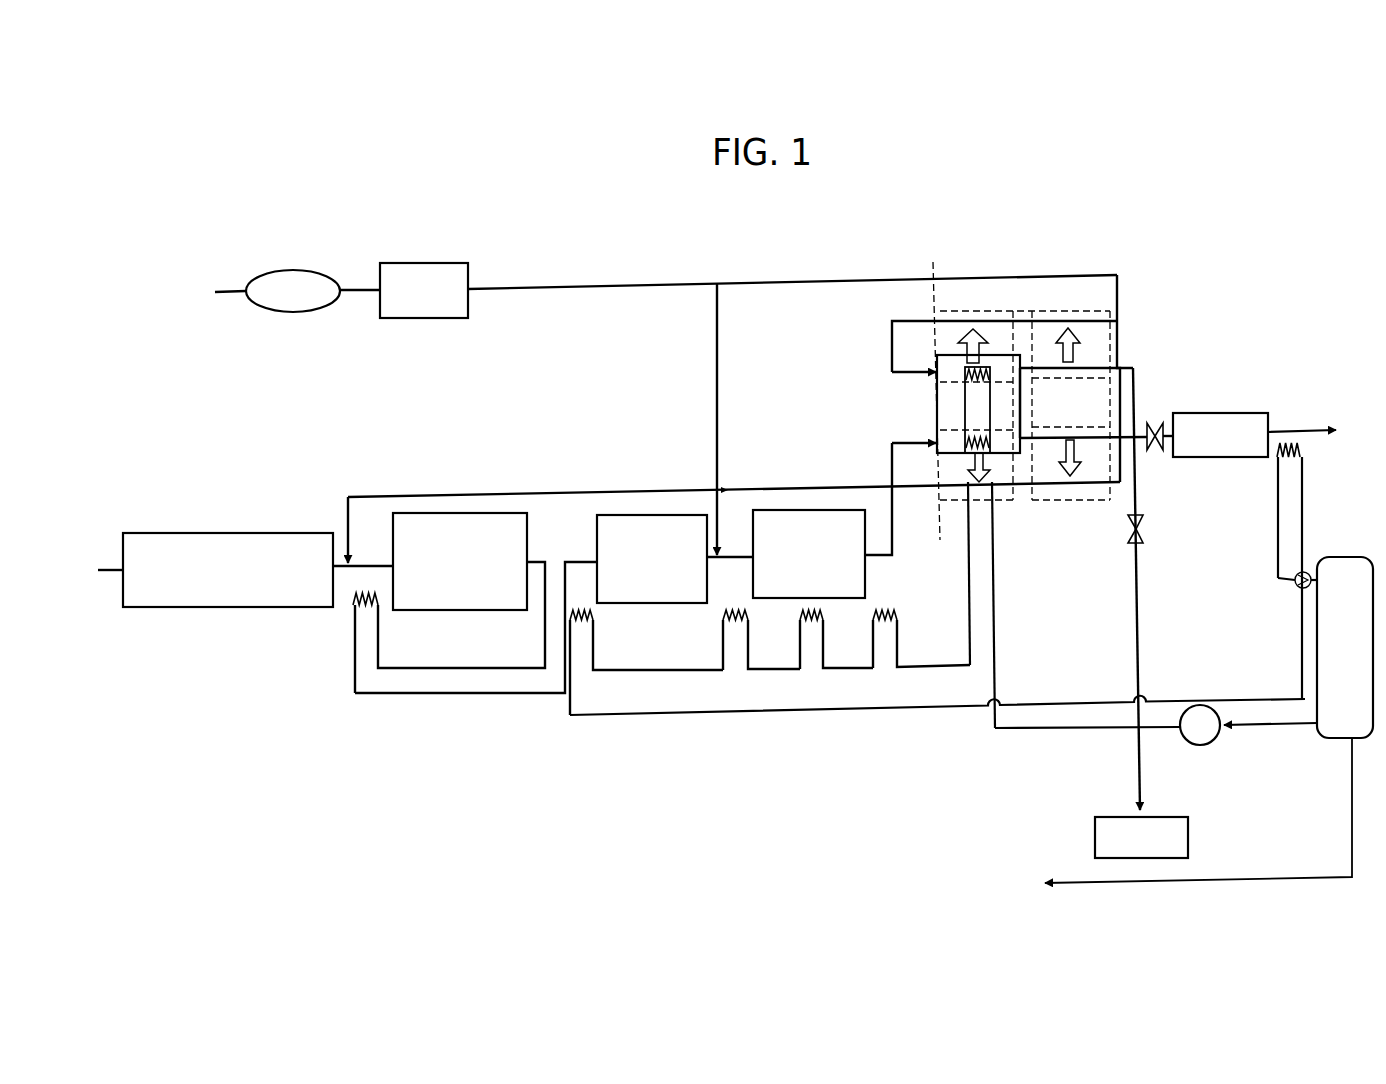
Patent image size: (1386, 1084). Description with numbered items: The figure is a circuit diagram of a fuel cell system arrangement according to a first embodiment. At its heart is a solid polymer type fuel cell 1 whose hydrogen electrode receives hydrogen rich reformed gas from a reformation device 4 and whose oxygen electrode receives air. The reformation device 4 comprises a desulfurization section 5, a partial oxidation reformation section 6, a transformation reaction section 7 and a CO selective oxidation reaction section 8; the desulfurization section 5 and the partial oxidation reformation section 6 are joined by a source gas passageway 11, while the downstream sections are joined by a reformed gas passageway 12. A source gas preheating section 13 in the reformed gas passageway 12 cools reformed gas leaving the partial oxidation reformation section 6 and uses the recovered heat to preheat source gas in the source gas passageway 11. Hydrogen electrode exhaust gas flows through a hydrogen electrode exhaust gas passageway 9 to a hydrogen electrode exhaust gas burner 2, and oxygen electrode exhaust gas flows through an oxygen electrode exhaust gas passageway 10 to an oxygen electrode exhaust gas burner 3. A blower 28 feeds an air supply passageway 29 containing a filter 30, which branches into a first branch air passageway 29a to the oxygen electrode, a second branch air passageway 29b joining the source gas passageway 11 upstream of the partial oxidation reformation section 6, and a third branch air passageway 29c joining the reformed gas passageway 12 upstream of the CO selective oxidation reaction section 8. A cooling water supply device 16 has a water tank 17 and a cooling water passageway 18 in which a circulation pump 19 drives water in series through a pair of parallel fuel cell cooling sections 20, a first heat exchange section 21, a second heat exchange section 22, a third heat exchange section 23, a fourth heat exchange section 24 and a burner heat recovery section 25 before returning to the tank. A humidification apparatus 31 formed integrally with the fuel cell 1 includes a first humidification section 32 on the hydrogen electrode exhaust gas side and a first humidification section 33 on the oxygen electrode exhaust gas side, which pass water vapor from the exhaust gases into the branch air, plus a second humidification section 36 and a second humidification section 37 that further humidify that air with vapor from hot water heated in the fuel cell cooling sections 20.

The fuel cell 1 is at (937, 399).
The hydrogen electrode exhaust gas burner 2 is at (1215, 413).
The oxygen electrode exhaust gas burner 3 is at (1190, 835).
The reformation device 4 is at (545, 477).
The desulfurization section 5 is at (238, 607).
The partial oxidation reformation section 6 is at (475, 513).
The transformation reaction section 7 is at (650, 515).
The CO selective oxidation reaction section 8 is at (796, 510).
The hydrogen electrode exhaust gas passageway 9 is at (1046, 440).
The oxygen electrode exhaust gas passageway 10 is at (1042, 367).
The source gas passageway 11 is at (107, 572).
The reformed gas passageway 12 is at (542, 562).
The source gas preheating section 13 is at (375, 600).
The cooling water supply device 16 is at (1328, 522).
The water tank 17 is at (1332, 740).
The cooling water passageway 18 is at (1035, 705).
The circulation pump 19 is at (1205, 745).
The fuel cell cooling section 20 is at (983, 355).
The first heat exchange section 21 is at (884, 620).
The second heat exchange section 22 is at (810, 620).
The third heat exchange section 23 is at (735, 620).
The fourth heat exchange section 24 is at (580, 620).
The burner heat recovery section 25 is at (1296, 440).
The blower 28 is at (293, 268).
The air supply passageway 29 is at (676, 281).
The first branch air passageway 29a is at (1093, 310).
The second branch air passageway 29b is at (1092, 486).
The third branch air passageway 29c is at (715, 362).
The filter 30 is at (428, 263).
The humidification apparatus 31 is at (1122, 342).
The first humidification section on the hydrogen electrode exhaust gas side 32 is at (1098, 417).
The first humidification section on the oxygen electrode exhaust gas side 33 is at (1047, 388).
The second humidification section on the hydrogen electrode exhaust gas side 36 is at (942, 553).
The second humidification section on the oxygen electrode exhaust gas side 37 is at (1011, 389).